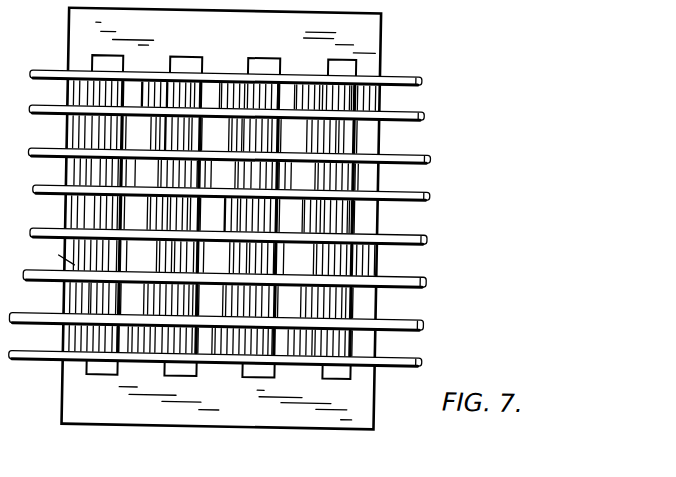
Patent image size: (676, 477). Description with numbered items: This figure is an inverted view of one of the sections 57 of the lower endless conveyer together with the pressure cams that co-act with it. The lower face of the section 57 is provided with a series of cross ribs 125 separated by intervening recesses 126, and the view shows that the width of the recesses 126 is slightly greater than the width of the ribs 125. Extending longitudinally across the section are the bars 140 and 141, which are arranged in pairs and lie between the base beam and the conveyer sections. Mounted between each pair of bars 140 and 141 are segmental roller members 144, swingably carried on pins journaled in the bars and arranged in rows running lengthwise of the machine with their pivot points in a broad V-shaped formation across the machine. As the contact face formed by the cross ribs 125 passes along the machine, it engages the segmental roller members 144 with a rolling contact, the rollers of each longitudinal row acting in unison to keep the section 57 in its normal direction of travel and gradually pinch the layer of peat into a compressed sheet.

The section 57 is at (382, 44).
The cross rib 125 is at (203, 52).
The recess 126 is at (223, 64).
The segmental roller member 144 is at (335, 334).
The bar 141 is at (428, 323).
The bar 140 is at (412, 360).